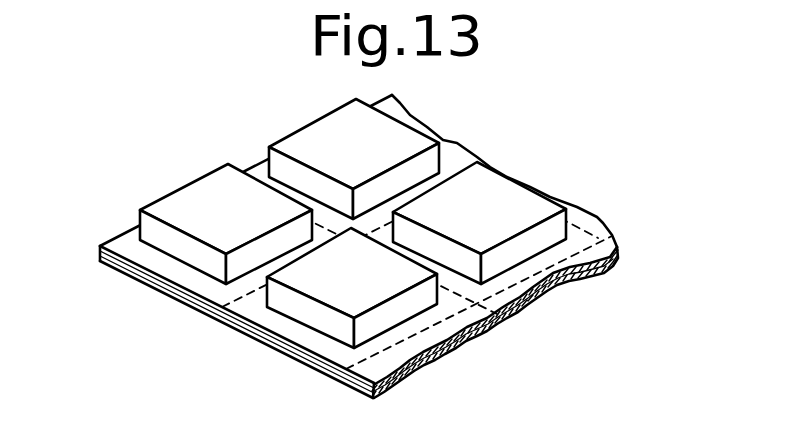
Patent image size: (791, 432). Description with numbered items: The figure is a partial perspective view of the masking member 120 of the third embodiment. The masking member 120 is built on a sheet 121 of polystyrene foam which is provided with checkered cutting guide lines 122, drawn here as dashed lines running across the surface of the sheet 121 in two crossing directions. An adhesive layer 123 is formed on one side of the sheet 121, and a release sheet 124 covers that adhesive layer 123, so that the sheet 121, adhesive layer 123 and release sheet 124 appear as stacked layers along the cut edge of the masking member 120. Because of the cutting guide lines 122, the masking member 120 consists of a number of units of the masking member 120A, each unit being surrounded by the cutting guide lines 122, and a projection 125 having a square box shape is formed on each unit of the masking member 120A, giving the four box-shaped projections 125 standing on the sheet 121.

The masking member 120 is at (119, 219).
The unit of the masking member 120A is at (445, 166).
The sheet 121 is at (337, 378).
The cutting guide lines 122 is at (585, 233).
The adhesive layer 123 is at (426, 373).
The release sheet 124 is at (300, 360).
The projection 125 is at (330, 294).